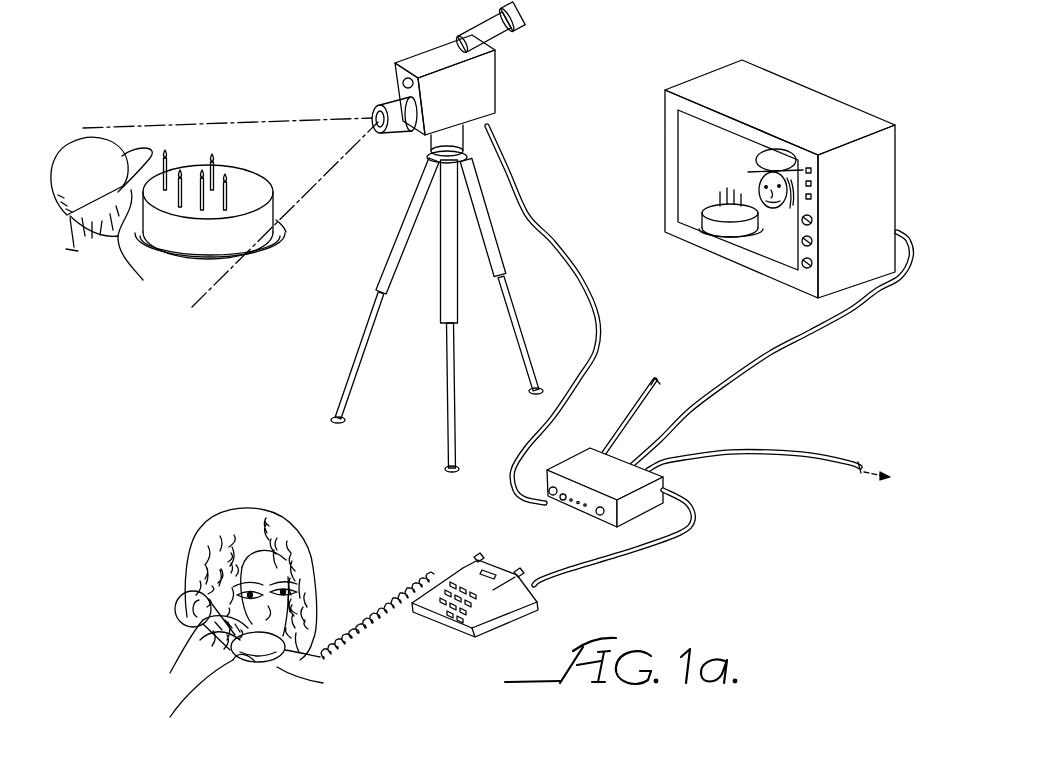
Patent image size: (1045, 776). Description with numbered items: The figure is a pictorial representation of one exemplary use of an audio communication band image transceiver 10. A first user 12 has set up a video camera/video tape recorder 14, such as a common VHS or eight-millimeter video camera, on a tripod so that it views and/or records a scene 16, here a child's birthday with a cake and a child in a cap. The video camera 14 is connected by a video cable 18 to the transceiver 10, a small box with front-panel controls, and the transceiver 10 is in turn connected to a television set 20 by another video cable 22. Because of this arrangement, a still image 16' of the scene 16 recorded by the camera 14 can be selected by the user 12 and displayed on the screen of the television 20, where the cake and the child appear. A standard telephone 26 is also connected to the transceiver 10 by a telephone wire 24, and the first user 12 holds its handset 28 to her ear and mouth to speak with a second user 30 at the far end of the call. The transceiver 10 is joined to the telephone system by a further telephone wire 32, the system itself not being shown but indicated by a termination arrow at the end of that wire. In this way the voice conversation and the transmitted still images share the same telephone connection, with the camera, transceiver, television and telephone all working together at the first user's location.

The audio communication band image transceiver 10 is at (587, 444).
The first user 12 is at (314, 529).
The video camera/video tape recorder 14 is at (403, 47).
The scene 16 is at (214, 193).
The still image 16' is at (705, 193).
The video cable 18 is at (548, 238).
The television set 20 is at (845, 94).
The video cable 22 is at (769, 352).
The telephone wire 24 is at (639, 553).
The telephone 26 is at (458, 634).
The handset 28 is at (247, 661).
The second user 30 is at (657, 382).
The telephone wire 32 is at (798, 456).